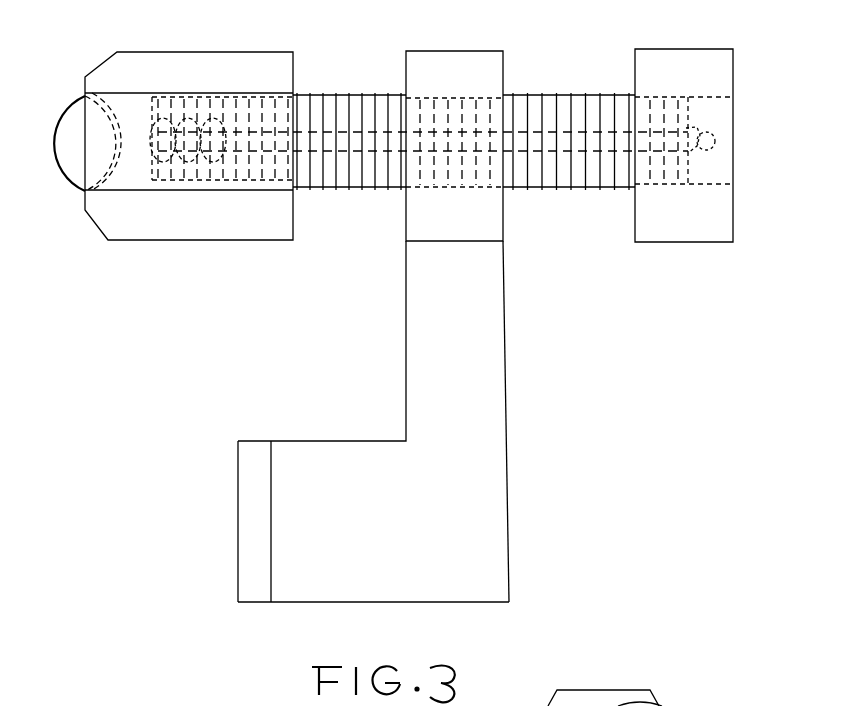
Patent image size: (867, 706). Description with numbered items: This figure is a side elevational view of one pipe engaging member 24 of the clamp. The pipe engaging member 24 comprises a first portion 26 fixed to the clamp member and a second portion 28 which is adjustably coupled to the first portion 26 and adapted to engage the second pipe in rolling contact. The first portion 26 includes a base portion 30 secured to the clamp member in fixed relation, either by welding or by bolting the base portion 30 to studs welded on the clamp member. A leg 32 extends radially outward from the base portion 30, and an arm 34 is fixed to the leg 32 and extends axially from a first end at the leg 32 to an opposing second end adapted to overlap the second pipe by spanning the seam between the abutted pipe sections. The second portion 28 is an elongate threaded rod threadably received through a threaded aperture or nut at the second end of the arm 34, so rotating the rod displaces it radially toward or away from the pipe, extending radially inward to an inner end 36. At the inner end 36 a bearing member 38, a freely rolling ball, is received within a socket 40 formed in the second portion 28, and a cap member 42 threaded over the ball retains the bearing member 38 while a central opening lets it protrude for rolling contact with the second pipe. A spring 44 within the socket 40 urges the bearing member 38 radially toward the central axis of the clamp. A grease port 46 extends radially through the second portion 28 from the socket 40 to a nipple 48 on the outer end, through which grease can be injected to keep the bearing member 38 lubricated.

The pipe engaging member 24 is at (417, 183).
The first portion 26 is at (363, 443).
The second portion 28 is at (352, 177).
The base portion 30 is at (255, 514).
The leg 32 is at (394, 592).
The arm 34 is at (504, 336).
The inner end 36 is at (157, 97).
The bearing member 38 is at (72, 172).
The socket 40 is at (145, 180).
The cap member 42 is at (213, 230).
The spring 44 is at (195, 140).
The grease port 46 is at (548, 132).
The nipple 48 is at (708, 133).